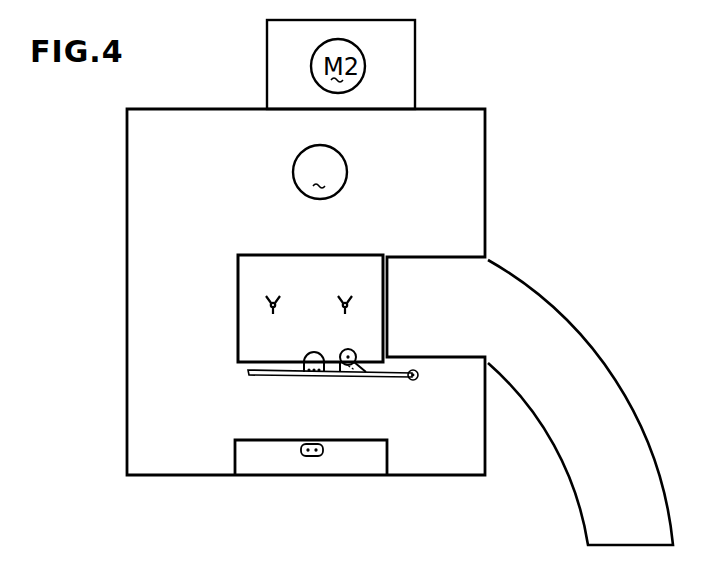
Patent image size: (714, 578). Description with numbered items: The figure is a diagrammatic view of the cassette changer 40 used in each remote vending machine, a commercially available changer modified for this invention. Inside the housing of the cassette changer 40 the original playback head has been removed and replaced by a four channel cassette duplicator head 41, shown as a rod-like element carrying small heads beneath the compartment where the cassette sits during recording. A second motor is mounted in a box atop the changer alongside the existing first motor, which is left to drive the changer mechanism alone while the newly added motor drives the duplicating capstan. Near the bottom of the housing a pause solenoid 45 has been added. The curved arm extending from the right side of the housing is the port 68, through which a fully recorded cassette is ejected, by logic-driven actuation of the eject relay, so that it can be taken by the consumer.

The cassette changer 40 is at (481, 219).
The four channel cassette duplicator head 41 is at (308, 363).
The pause solenoid 45 is at (318, 457).
The port 68 is at (615, 401).